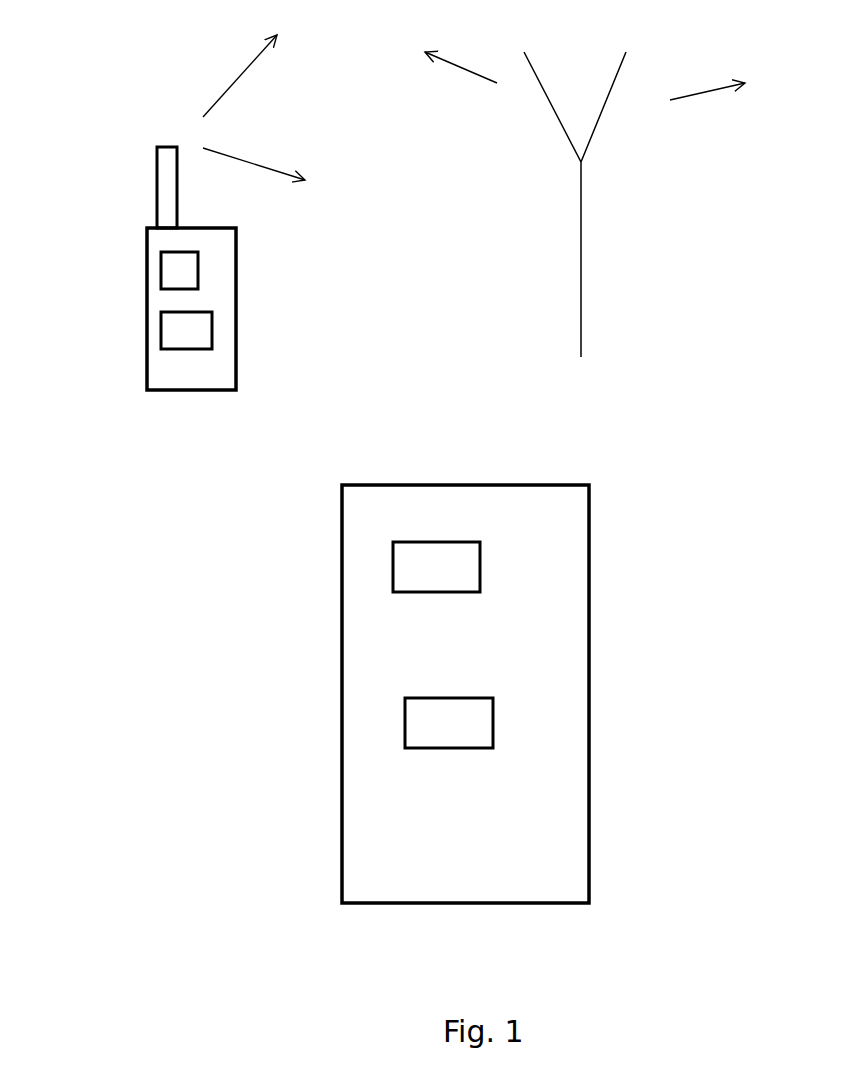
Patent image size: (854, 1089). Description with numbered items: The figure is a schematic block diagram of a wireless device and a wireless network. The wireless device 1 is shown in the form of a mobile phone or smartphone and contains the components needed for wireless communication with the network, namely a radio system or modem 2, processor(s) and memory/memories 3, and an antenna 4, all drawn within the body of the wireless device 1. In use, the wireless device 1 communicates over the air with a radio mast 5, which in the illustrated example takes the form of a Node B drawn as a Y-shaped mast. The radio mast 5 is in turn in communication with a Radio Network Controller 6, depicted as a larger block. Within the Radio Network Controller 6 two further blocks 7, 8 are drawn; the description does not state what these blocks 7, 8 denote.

The wireless device 1 is at (147, 283).
The radio system or modem 2 is at (198, 260).
The processor(s) and memory/memories 3 is at (161, 335).
The antenna 4 is at (157, 170).
The radio mast 5 is at (581, 207).
The Radio Network Controller 6 is at (589, 729).
The receiver unit 7 is at (393, 577).
The processing unit 8 is at (405, 720).